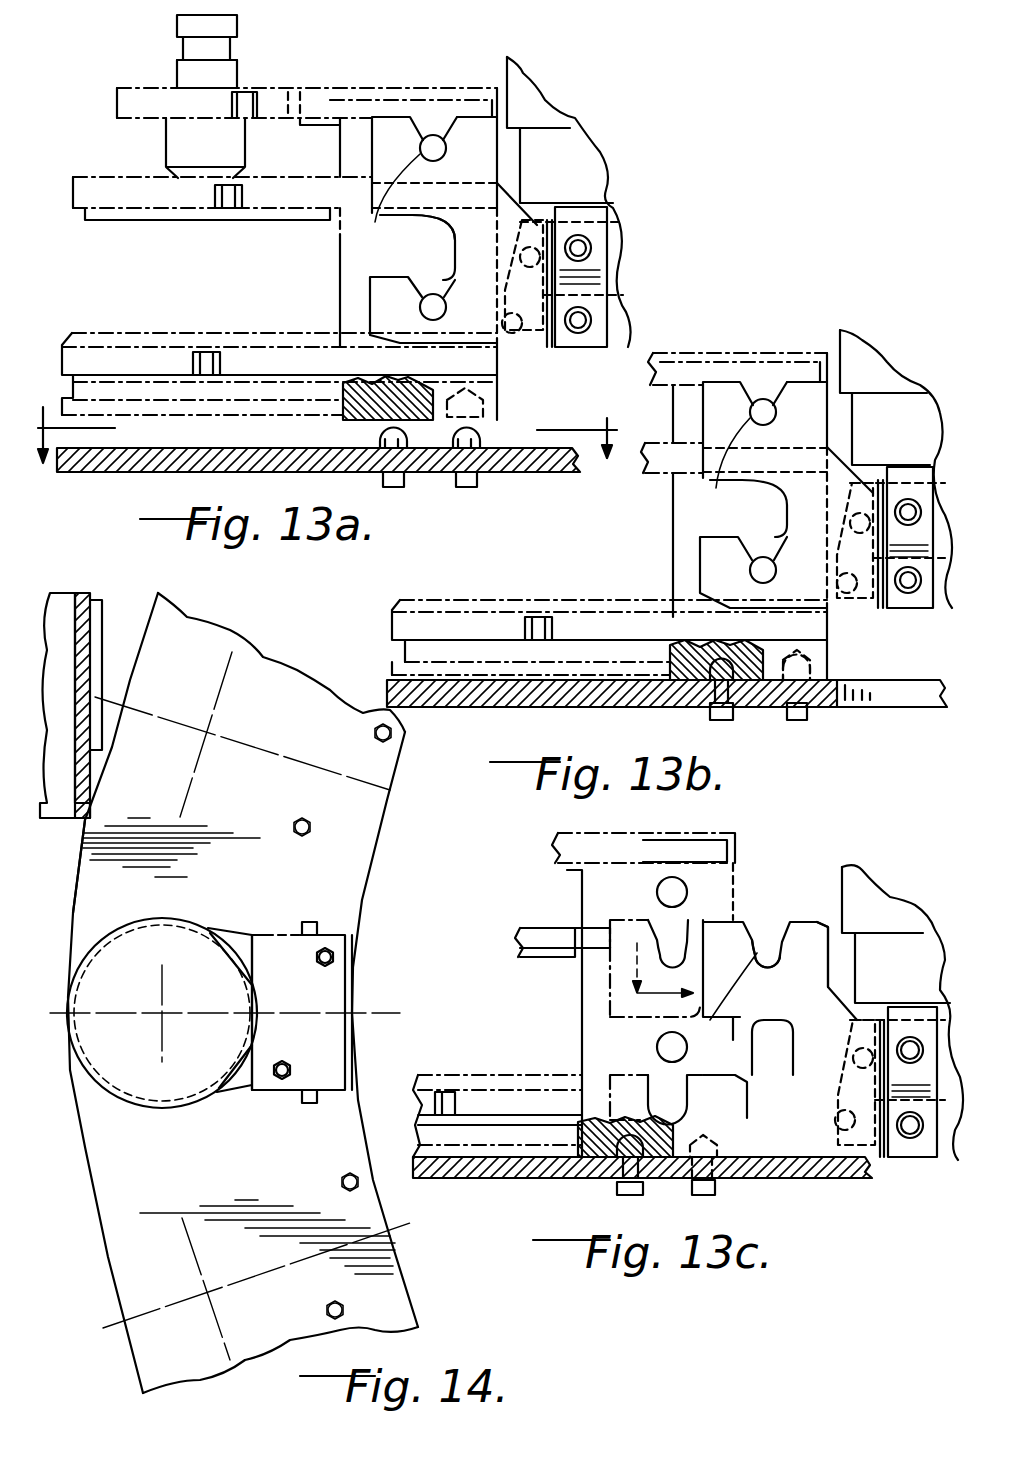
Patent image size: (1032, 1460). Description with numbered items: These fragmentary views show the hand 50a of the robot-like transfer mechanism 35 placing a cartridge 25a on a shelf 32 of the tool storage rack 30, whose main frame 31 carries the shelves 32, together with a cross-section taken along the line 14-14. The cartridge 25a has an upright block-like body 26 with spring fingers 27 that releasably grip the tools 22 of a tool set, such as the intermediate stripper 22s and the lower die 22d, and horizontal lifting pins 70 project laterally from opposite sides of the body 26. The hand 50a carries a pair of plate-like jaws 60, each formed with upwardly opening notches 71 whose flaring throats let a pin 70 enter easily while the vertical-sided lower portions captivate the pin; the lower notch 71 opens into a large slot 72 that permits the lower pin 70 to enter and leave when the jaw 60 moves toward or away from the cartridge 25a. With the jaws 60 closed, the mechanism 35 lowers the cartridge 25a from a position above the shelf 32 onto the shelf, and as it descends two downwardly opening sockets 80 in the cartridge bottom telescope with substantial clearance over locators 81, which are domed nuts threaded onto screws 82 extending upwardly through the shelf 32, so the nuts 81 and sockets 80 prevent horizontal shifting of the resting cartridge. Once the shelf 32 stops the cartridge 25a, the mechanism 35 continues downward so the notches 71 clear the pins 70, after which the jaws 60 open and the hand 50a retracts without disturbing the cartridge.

In FIG. 13A, the section line 14 is at (328, 421).
In FIG. 14, the tools 22 is at (130, 950).
In FIG. 13A, the intermediate stripper 22s is at (180, 198).
In FIG. 13A, the lower die 22d is at (85, 345).
In FIG. 13B, the lower die 22d is at (428, 620).
In FIG. 13C, the lower die 22d is at (507, 1078).
In FIG. 13A, the cartridge 25a is at (362, 260).
In FIG. 13B, the cartridge 25a is at (688, 510).
In FIG. 13C, the cartridge 25a is at (596, 1025).
In FIG. 14, the cartridge 25a is at (337, 980).
In FIG. 13A, the block-like body 26 is at (340, 300).
In FIG. 13C, the block-like body 26 is at (734, 908).
In FIG. 14, the block-like body 26 is at (263, 940).
In FIG. 13A, the spring fingers 27 is at (265, 98).
In FIG. 13B, the spring fingers 27 is at (672, 372).
In FIG. 13C, the spring fingers 27 is at (550, 927).
In FIG. 14, the spring fingers 27 is at (215, 930).
In FIG. 14, the tool storage rack 30 is at (110, 1310).
In FIG. 14, the main frame 31 is at (57, 805).
In FIG. 13A, the shelves 32 is at (110, 472).
In FIG. 13B, the shelves 32 is at (667, 693).
In FIG. 13C, the shelves 32 is at (470, 1178).
In FIG. 14, the shelves 32 is at (107, 1258).
In FIG. 13A, the transfer mechanism 35 is at (600, 146).
In FIG. 13B, the transfer mechanism 35 is at (892, 360).
In FIG. 13C, the transfer mechanism 35 is at (865, 866).
In FIG. 13A, the hand 50a is at (482, 136).
In FIG. 13B, the hand 50a is at (805, 392).
In FIG. 13C, the hand 50a is at (820, 1165).
In FIG. 13A, the jaws 60 is at (490, 227).
In FIG. 13B, the jaws 60 is at (886, 527).
In FIG. 13C, the jaws 60 is at (815, 973).
In FIG. 13A, the lifting elements 70 is at (435, 136).
In FIG. 13B, the lifting elements 70 is at (768, 400).
In FIG. 13C, the lifting elements 70 is at (685, 885).
In FIG. 14, the lifting elements 70 is at (315, 925).
In FIG. 13A, the notches 71 is at (428, 297).
In FIG. 13B, the notches 71 is at (758, 558).
In FIG. 13C, the notches 71 is at (755, 1075).
In FIG. 13A, the slot 72 is at (410, 216).
In FIG. 13C, the slot 72 is at (772, 1007).
In FIG. 13A, the sockets 80 is at (484, 400).
In FIG. 13B, the sockets 80 is at (814, 645).
In FIG. 13C, the sockets 80 is at (647, 1136).
In FIG. 13A, the locators 81 is at (458, 431).
In FIG. 13B, the locators 81 is at (800, 722).
In FIG. 13C, the locators 81 is at (666, 1165).
In FIG. 14, the locators 81 is at (340, 955).
In FIG. 13A, the screws 82 is at (468, 487).